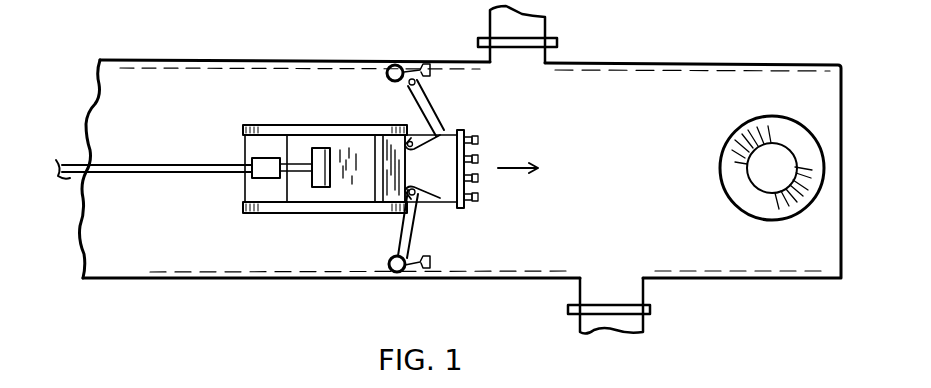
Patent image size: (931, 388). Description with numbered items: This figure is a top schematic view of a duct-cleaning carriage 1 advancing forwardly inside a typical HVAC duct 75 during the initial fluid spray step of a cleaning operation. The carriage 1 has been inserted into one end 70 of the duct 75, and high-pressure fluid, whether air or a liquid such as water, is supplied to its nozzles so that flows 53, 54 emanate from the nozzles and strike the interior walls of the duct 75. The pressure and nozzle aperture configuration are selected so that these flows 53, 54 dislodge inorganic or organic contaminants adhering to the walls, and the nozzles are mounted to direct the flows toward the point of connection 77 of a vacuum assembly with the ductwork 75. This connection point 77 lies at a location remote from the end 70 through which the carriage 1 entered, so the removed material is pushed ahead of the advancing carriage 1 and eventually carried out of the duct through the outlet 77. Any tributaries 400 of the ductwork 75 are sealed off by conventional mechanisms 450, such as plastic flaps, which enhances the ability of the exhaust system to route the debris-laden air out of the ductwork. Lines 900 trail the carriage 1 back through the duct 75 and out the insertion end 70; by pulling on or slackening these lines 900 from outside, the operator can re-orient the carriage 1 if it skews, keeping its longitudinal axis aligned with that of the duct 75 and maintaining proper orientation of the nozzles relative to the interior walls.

The carriage 1 is at (235, 116).
The fluid flow 53 is at (447, 60).
The fluid flow 54 is at (493, 272).
The end of duct 70 is at (112, 106).
The duct 75 is at (333, 58).
The point of connection 77 is at (722, 178).
The tributary 400 is at (643, 330).
The sealing mechanism 450 is at (557, 43).
The lines 900 is at (188, 176).